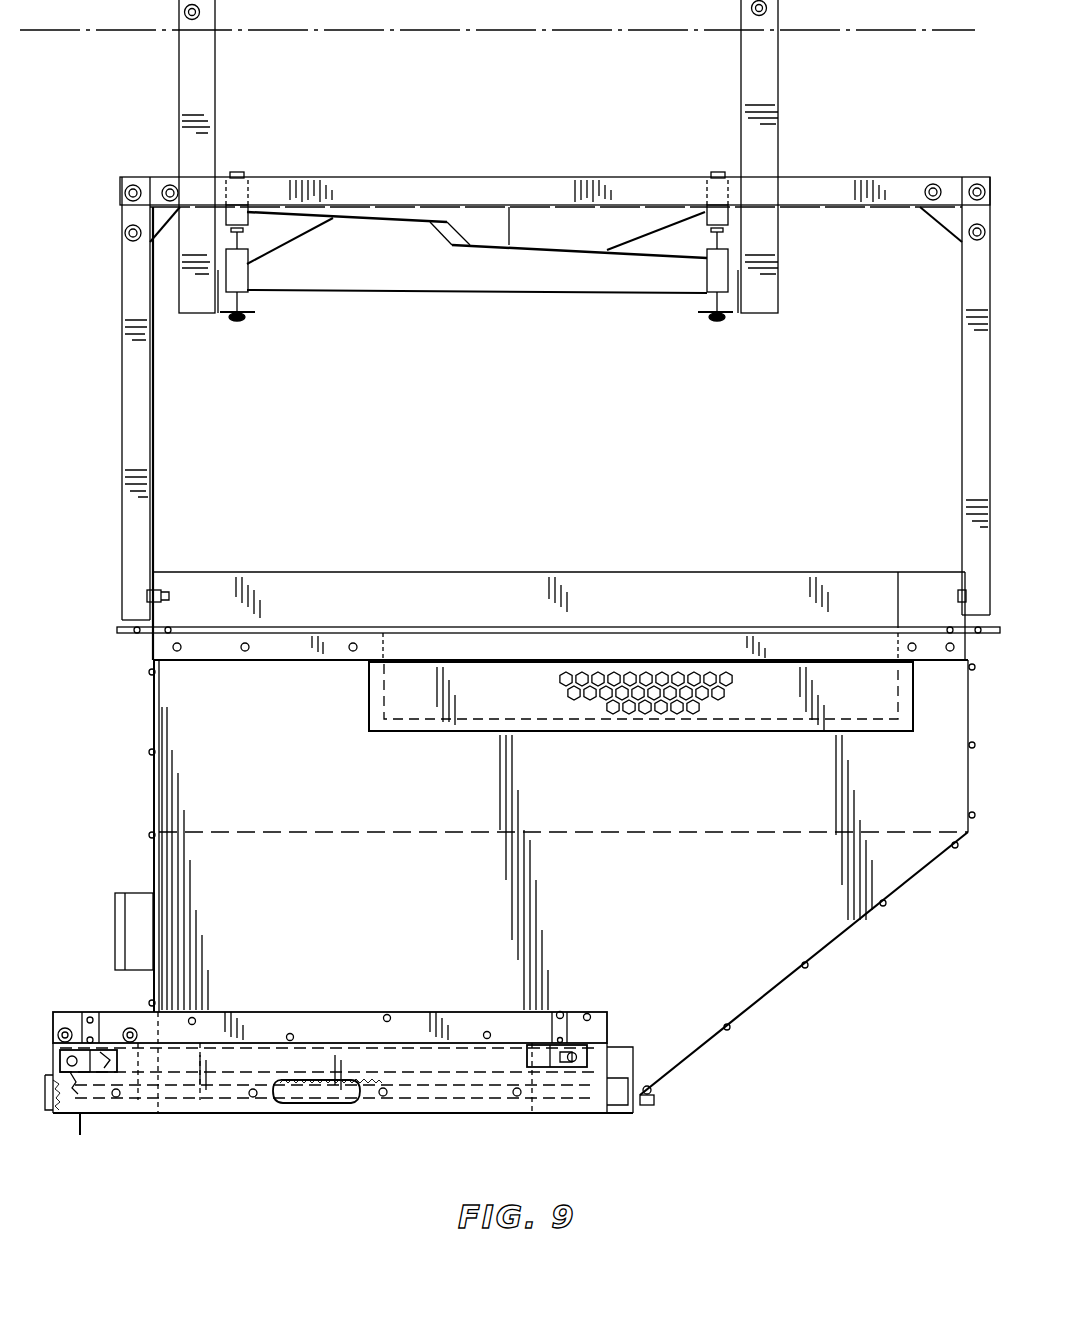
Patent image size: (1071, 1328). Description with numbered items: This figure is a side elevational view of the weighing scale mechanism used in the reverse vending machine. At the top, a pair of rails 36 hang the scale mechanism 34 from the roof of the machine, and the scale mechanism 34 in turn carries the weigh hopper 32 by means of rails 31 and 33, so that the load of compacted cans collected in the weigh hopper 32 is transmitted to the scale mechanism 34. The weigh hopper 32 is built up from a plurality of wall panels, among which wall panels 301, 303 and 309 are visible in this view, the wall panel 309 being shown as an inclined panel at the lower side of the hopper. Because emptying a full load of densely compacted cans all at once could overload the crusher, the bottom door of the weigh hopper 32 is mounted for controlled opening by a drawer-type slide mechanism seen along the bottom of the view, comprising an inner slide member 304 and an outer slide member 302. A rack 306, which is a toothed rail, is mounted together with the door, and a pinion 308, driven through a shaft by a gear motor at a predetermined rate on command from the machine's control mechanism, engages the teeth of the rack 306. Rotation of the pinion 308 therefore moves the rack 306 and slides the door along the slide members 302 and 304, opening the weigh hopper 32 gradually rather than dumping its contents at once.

The rail 31 is at (137, 427).
The weigh hopper 32 is at (373, 950).
The rail 33 is at (862, 193).
The scale mechanism 34 is at (446, 281).
The rail 36 is at (200, 92).
The wall panel 301 is at (155, 785).
The outer slide member 302 is at (227, 1093).
The wall panel 303 is at (740, 798).
The inner slide member 304 is at (227, 1093).
The rack 306 is at (320, 1093).
The pinion 308 is at (95, 1097).
The wall panel 309 is at (910, 877).